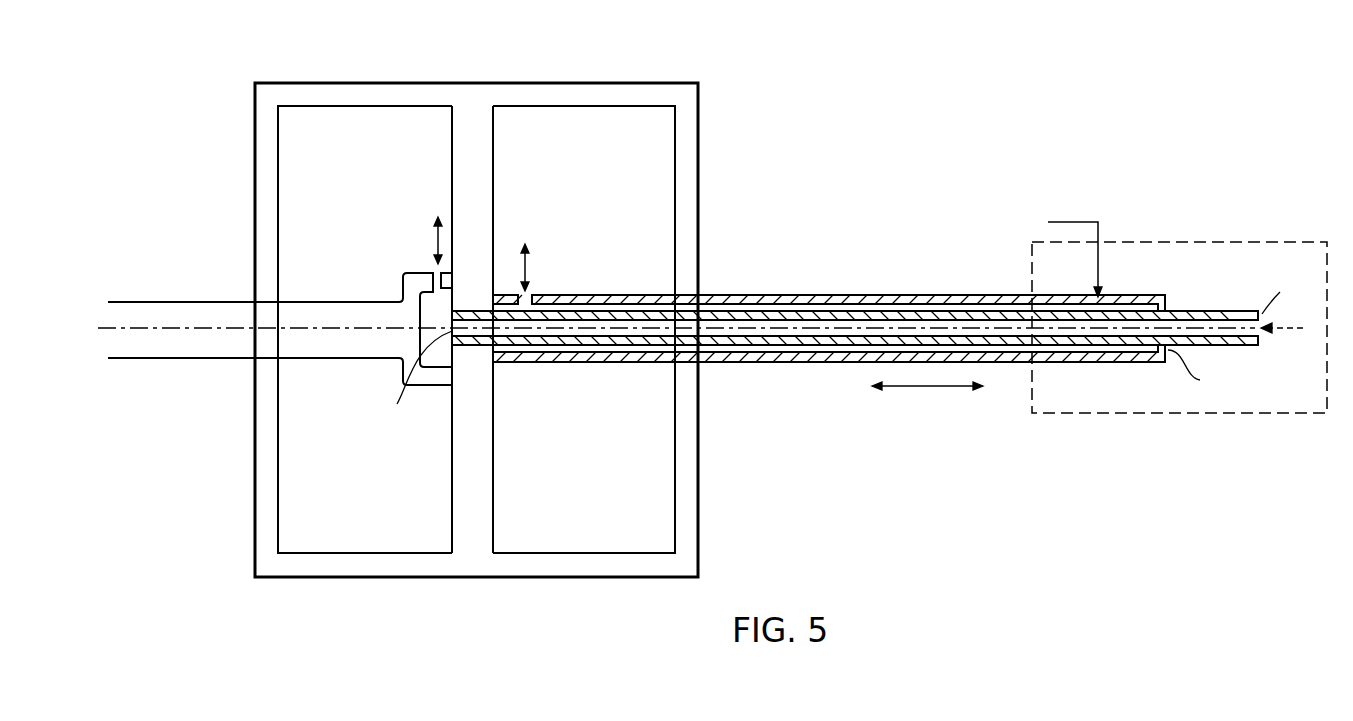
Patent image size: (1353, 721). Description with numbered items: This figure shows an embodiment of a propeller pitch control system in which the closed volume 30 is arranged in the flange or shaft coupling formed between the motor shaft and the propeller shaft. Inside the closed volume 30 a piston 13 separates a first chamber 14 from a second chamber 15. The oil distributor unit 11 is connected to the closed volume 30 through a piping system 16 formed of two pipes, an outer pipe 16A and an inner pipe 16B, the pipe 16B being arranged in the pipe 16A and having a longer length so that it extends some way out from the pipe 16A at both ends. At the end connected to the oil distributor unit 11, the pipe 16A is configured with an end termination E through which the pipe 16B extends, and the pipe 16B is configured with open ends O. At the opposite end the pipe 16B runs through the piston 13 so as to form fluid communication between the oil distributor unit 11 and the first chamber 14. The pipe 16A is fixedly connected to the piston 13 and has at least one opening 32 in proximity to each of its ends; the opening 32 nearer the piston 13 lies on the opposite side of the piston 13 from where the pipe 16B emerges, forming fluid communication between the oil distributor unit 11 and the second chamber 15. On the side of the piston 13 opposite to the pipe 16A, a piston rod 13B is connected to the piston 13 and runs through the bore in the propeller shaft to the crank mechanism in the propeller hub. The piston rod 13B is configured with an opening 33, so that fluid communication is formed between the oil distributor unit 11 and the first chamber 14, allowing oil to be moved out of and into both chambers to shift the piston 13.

The oil distributor unit 11 is at (1178, 252).
The piston 13 is at (468, 123).
The piston rod 13B is at (183, 318).
The first chamber 14 is at (337, 200).
The second chamber 15 is at (617, 192).
The piping system 16 is at (855, 320).
The pipe 16A is at (783, 295).
The pipe 16B is at (795, 348).
The closed volume 30 is at (544, 96).
The opening 32 is at (523, 300).
The opening 33 is at (437, 271).
The open ends O is at (840, 350).
The end termination E is at (1197, 373).